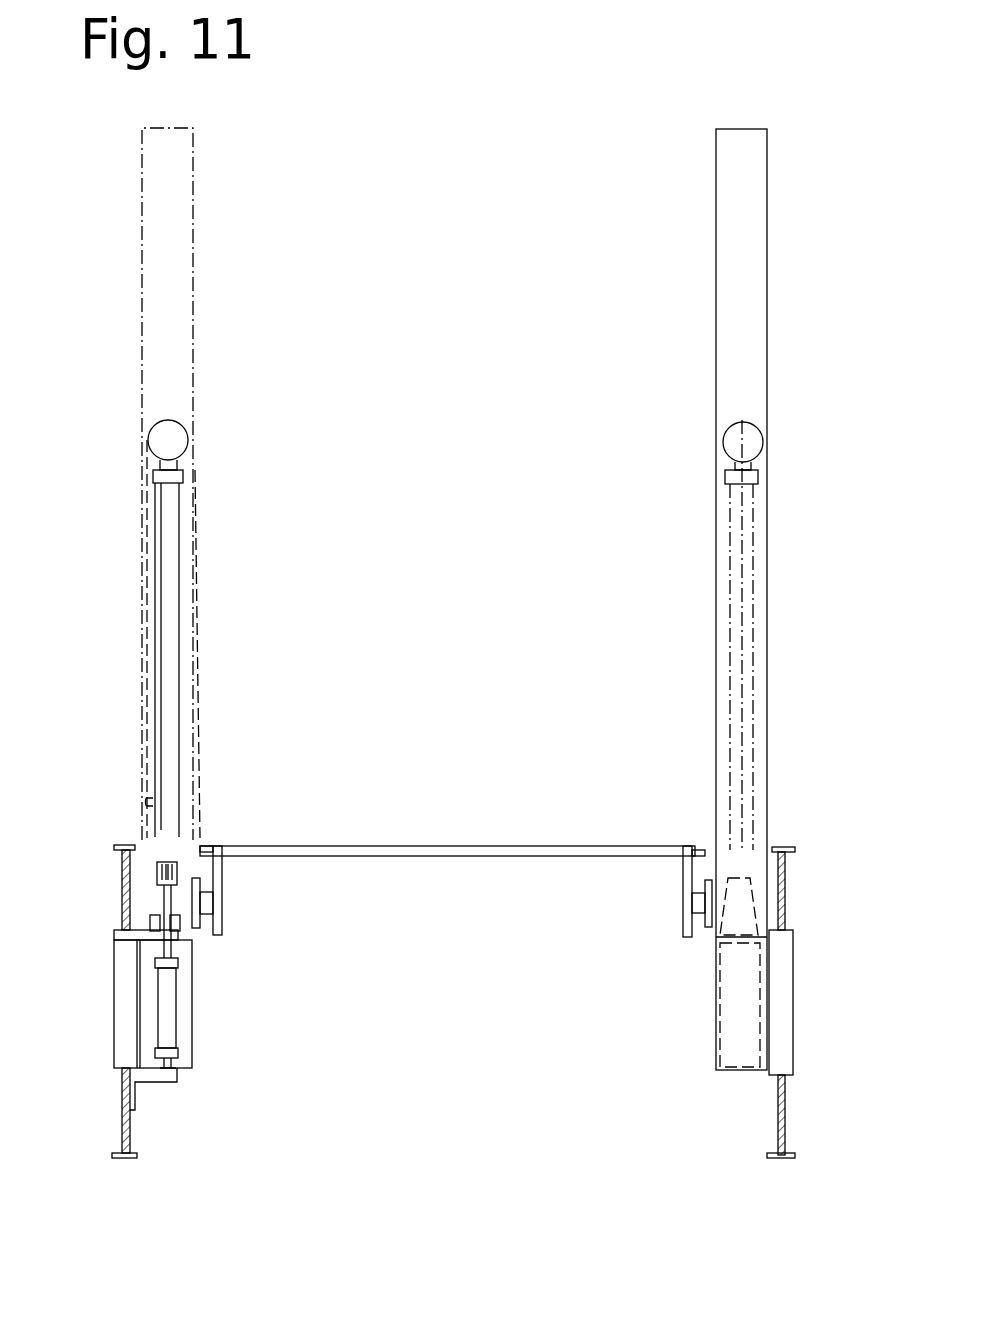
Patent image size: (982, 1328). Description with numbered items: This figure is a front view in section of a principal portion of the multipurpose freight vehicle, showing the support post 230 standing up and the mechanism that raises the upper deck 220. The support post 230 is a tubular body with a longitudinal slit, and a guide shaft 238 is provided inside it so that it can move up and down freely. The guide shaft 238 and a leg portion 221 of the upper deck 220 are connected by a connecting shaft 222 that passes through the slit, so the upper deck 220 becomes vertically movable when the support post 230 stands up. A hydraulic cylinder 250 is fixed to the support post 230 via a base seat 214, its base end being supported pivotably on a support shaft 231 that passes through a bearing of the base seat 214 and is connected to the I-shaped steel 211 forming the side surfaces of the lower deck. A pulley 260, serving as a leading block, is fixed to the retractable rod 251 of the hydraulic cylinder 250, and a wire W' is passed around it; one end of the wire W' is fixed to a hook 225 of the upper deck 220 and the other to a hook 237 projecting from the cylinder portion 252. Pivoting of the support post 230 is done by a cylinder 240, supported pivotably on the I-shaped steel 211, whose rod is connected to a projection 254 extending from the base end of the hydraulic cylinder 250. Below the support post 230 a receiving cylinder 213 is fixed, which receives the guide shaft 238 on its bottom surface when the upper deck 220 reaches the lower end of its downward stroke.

The support post 230 is at (180, 230).
The wire W' is at (122, 639).
The pulley 260 is at (178, 426).
The retractable rod 251 is at (182, 465).
The hydraulic cylinder 250 is at (180, 622).
The cylinder portion 252 is at (170, 690).
The hook 237 is at (150, 814).
The I-shaped steel 211 is at (115, 847).
The support shaft 231 is at (140, 936).
The receiving cylinder 213 is at (148, 1010).
The cylinder 240 is at (168, 1022).
The projection 254 is at (160, 872).
The base seat 214 is at (160, 906).
The upper deck 220 is at (447, 846).
The hook 225 is at (205, 843).
The leg portion 221 is at (210, 918).
The connecting shaft 222 is at (683, 903).
The guide shaft 238 is at (748, 905).